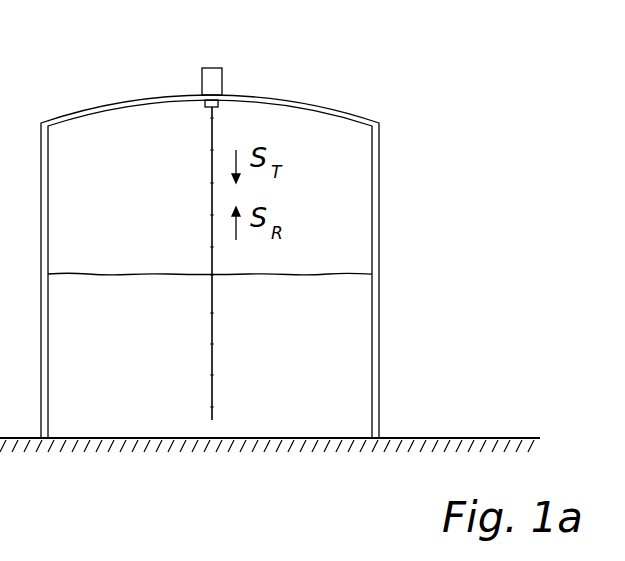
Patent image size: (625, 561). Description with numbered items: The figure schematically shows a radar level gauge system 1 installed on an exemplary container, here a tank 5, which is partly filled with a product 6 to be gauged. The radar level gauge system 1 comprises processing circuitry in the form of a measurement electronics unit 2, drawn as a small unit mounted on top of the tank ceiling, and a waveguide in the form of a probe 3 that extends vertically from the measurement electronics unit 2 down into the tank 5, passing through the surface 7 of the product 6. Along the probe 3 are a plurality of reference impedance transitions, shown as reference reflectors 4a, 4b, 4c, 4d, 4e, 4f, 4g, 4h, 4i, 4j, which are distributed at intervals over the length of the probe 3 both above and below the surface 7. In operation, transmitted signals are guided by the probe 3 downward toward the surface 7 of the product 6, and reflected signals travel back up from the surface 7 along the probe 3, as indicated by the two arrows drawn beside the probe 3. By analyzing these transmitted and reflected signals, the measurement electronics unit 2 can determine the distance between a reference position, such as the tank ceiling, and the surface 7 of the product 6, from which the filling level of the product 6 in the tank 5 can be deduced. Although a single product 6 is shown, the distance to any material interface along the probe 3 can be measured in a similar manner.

The radar level gauge system 1 is at (212, 217).
The measurement electronics unit 2 is at (202, 80).
The probe 3 is at (214, 138).
The reference reflector 4a is at (211, 118).
The reference reflector 4b is at (211, 149).
The reference reflector 4c is at (211, 182).
The reference reflector 4d is at (211, 214).
The reference reflector 4e is at (211, 246).
The reference reflector 4f is at (212, 274).
The reference reflector 4g is at (212, 313).
The reference reflector 4h is at (212, 344).
The reference reflector 4i is at (212, 375).
The reference reflector 4j is at (212, 407).
The tank 5 is at (379, 153).
The product 6 is at (355, 345).
The surface 7 is at (355, 274).